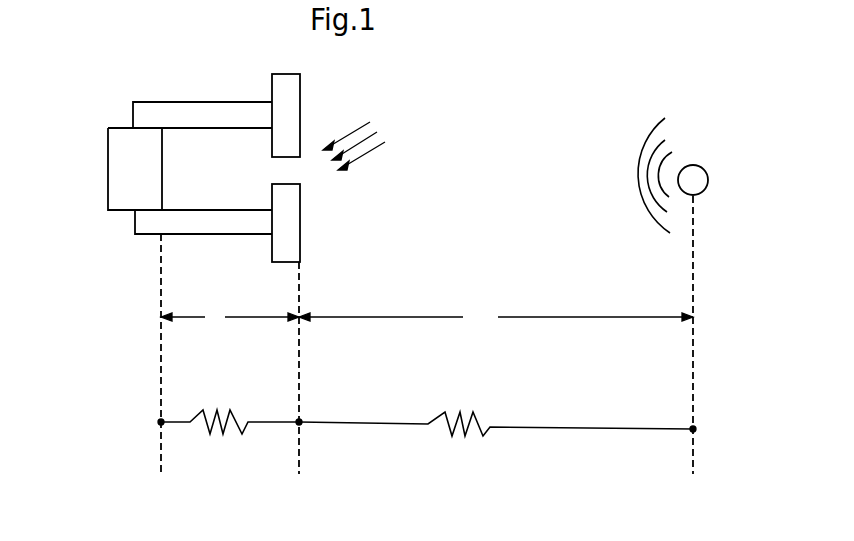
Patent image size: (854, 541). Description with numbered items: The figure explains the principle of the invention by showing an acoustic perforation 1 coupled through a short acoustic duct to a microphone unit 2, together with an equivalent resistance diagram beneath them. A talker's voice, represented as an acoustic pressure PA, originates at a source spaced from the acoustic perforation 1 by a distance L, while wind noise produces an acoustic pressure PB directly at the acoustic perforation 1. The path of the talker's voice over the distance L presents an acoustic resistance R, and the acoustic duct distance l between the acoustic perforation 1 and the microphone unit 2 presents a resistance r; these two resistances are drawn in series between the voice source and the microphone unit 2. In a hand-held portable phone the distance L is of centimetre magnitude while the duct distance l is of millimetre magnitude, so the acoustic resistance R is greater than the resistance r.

The acoustic perforation 1 is at (300, 175).
The microphone unit 2 is at (108, 128).
The acoustic pressure caused by a talker PA is at (700, 167).
The acoustic pressure caused by wind noises PB is at (371, 136).
The acoustic duct distance l is at (230, 316).
The distance L is at (496, 316).
The resistance of distance l r is at (230, 410).
The acoustic resistance R is at (497, 411).